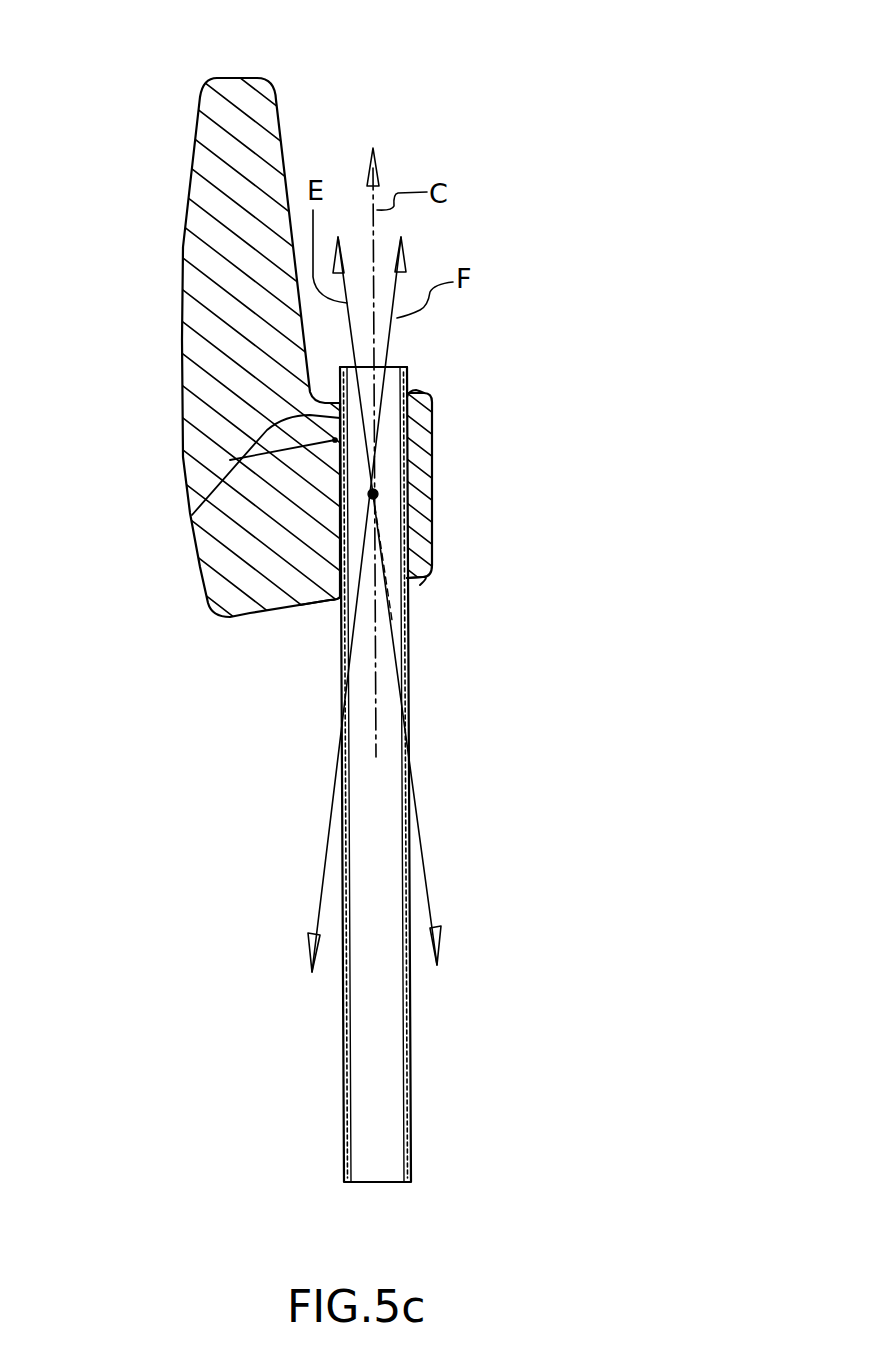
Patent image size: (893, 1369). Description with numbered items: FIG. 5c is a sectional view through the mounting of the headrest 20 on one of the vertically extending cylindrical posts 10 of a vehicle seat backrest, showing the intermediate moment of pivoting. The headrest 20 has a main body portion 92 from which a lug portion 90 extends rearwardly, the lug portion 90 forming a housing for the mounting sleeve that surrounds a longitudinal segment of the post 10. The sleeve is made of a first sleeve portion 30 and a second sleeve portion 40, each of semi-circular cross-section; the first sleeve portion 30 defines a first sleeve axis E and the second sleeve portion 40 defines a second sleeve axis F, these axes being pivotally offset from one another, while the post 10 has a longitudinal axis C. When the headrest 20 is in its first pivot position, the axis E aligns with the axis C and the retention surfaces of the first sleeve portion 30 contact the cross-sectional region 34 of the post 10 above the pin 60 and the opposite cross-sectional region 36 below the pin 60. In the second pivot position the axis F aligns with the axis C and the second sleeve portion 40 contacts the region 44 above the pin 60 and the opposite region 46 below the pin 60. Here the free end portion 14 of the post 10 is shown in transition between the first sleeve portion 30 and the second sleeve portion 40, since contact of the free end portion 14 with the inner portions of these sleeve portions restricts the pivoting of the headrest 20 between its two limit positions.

The mounting post 10 is at (409, 1065).
The free end portion 14 is at (392, 377).
The headrest 20 is at (356, 97).
The first sleeve portion 30 is at (192, 515).
The cross-sectional region of post 34 is at (230, 460).
The cross-sectional region of post 36 is at (420, 575).
The second sleeve portion 40 is at (410, 390).
The cross-sectional region of post 44 is at (413, 430).
The cross-sectional region of post 46 is at (317, 600).
The pin 60 is at (380, 493).
The lug portion 90 is at (413, 518).
The main body portion 92 is at (183, 245).